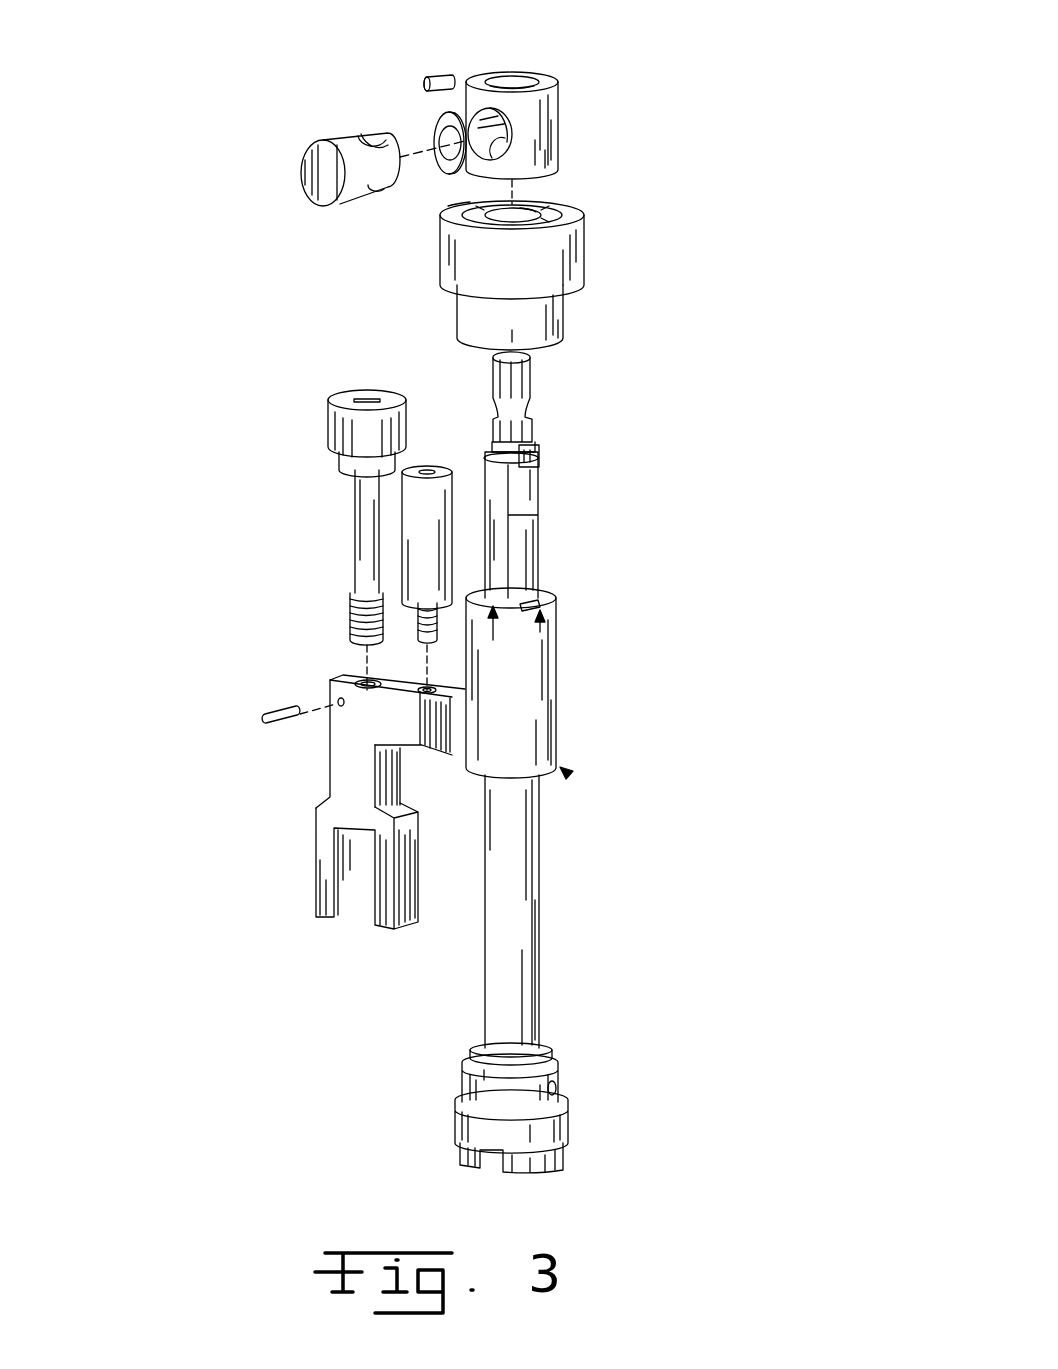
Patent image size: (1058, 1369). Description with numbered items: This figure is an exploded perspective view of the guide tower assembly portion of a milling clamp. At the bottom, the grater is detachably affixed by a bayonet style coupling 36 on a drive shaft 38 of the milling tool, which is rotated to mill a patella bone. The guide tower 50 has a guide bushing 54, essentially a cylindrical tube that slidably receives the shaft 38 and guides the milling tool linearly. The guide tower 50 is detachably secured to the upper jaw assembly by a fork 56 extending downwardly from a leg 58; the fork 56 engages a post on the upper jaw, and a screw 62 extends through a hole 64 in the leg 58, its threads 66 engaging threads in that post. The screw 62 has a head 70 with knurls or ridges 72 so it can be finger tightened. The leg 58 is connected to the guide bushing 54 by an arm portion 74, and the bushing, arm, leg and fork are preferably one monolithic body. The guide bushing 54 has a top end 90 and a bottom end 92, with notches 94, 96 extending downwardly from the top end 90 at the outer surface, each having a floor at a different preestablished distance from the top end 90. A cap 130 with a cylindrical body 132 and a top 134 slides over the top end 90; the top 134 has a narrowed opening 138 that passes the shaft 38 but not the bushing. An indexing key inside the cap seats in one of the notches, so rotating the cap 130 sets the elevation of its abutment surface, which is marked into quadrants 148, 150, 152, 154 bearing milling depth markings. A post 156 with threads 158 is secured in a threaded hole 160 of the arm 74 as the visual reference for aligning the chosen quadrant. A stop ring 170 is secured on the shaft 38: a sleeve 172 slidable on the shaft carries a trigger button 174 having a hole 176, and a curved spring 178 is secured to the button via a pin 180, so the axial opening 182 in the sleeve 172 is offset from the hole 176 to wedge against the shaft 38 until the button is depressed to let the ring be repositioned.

The bayonet style coupling 36 is at (552, 1122).
The drive shaft 38 is at (520, 955).
The guide tower 50 is at (312, 688).
The guide bushing 54 is at (535, 705).
The fork 56 is at (322, 885).
The leg 58 is at (340, 772).
The screw 62 is at (322, 401).
The hole 64 is at (362, 677).
The threads 66 is at (352, 608).
The head 70 is at (372, 395).
The knurls or ridges 72 is at (330, 425).
The arm portion 74 is at (437, 735).
The top end 90 is at (556, 580).
The bottom end 92 is at (566, 772).
The notch 94 is at (491, 640).
The notch 96 is at (540, 625).
The cap 130 is at (607, 268).
The cylindrical body 132 is at (562, 313).
The top 134 is at (585, 252).
The narrowed opening 138 is at (535, 212).
The quadrant 148 is at (448, 208).
The quadrant 150 is at (522, 222).
The quadrant 152 is at (575, 212).
The quadrant 154 is at (528, 207).
The post 156 is at (428, 467).
The threads 158 is at (420, 617).
The threaded hole 160 is at (420, 690).
The stop ring 170 is at (588, 105).
The sleeve 172 is at (555, 105).
The trigger button 174 is at (302, 165).
The hole 176 is at (360, 138).
The curved spring 178 is at (440, 118).
The pin 180 is at (434, 78).
The axial opening 182 is at (513, 78).